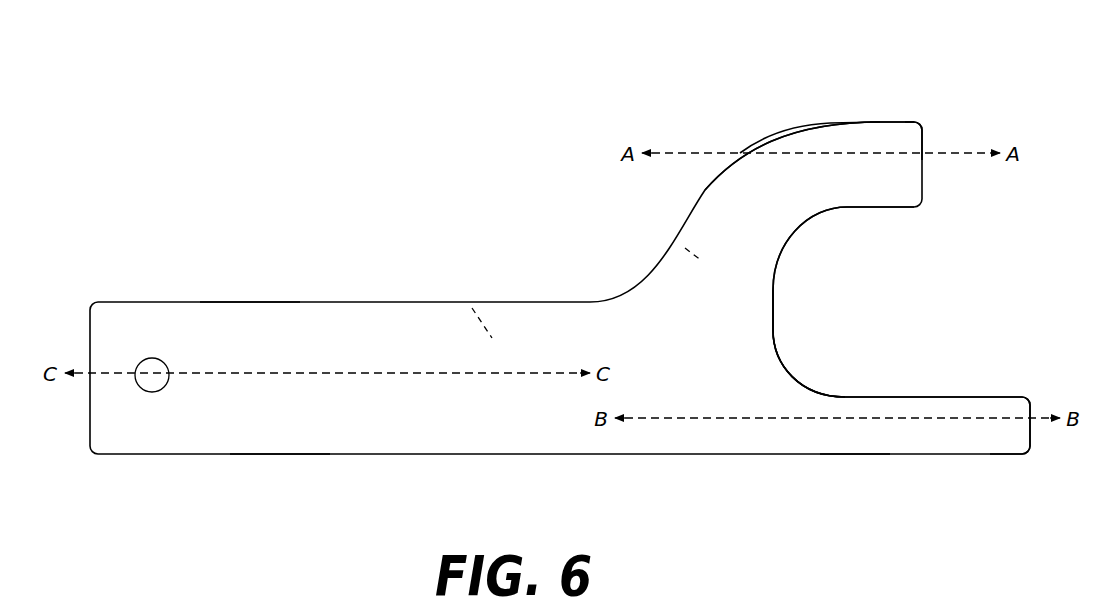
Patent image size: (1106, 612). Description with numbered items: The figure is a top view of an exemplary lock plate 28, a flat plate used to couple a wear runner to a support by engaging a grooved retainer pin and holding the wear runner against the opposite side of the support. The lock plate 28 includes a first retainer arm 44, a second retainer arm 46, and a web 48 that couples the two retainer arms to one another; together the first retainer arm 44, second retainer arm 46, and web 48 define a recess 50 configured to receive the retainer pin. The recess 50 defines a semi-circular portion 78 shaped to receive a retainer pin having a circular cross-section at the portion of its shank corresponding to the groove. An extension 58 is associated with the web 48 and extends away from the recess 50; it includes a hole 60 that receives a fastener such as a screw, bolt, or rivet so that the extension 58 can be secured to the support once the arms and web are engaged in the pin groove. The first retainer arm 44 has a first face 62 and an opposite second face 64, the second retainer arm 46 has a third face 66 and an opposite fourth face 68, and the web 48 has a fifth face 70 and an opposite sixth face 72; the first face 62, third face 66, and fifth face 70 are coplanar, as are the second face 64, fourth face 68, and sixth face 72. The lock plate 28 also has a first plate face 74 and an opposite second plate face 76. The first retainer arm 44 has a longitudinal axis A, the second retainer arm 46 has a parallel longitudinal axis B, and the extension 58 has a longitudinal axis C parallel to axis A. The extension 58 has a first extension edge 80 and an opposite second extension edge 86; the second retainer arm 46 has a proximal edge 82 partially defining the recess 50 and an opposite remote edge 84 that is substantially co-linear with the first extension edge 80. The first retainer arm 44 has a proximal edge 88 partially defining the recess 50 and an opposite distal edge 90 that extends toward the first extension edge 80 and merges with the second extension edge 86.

The lock plate 28 is at (386, 228).
The first retainer arm 44 is at (895, 133).
The second retainer arm 46 is at (948, 435).
The web 48 is at (748, 288).
The recess 50 is at (887, 298).
The extension 58 is at (430, 418).
The hole 60 is at (152, 372).
The first face 62 is at (850, 136).
The second face 64 is at (781, 147).
The third face 66 is at (905, 438).
The fourth face 68 is at (855, 445).
The fifth face 70 is at (740, 257).
The sixth face 72 is at (675, 245).
The first plate face 74 is at (547, 342).
The second plate face 76 is at (470, 303).
The semi-circular portion 78 is at (790, 355).
The first extension edge 80 is at (280, 455).
The proximal edge 82 is at (930, 395).
The remote edge 84 is at (1000, 455).
The second extension edge 86 is at (253, 302).
The proximal edge 88 is at (873, 210).
The distal edge 90 is at (903, 121).